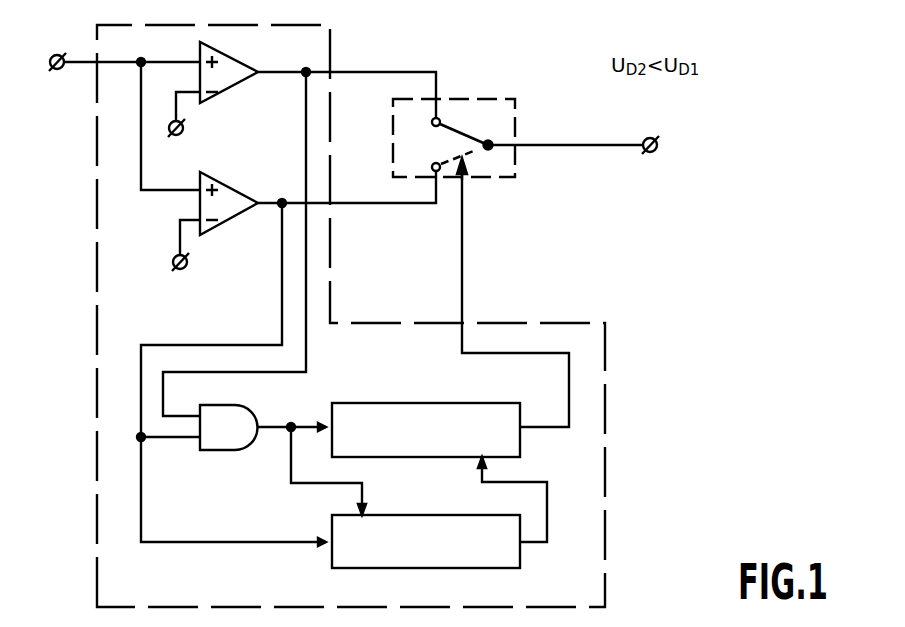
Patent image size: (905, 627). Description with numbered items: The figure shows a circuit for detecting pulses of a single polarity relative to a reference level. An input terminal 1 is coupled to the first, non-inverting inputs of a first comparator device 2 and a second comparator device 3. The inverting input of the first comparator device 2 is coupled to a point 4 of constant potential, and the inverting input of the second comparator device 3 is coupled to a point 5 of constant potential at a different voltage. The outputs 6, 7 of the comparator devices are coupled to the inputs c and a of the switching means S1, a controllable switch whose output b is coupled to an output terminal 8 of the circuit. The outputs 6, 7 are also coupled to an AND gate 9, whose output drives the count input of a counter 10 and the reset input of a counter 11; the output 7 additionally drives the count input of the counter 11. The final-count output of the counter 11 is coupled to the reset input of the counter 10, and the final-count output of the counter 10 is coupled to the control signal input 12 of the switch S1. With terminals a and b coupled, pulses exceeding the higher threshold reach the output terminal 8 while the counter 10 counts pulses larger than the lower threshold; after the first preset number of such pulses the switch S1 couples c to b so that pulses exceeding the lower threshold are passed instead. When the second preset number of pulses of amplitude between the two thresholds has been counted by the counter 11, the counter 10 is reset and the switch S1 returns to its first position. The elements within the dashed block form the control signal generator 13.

The input terminal 1 is at (51, 55).
The first comparator device 2 is at (236, 55).
The second comparator device 3 is at (236, 172).
The point of constant potential 4 is at (171, 122).
The point of constant potential 5 is at (172, 256).
The output of the first comparator device 6 is at (272, 80).
The output of the second comparator device 7 is at (268, 210).
The output terminal 8 is at (656, 152).
The AND gate 9 is at (250, 452).
The counter 10 is at (372, 403).
The counter 11 is at (418, 515).
The control signal input 12 is at (466, 184).
The control signal generator 13 is at (532, 322).
The switching means S1 is at (470, 97).